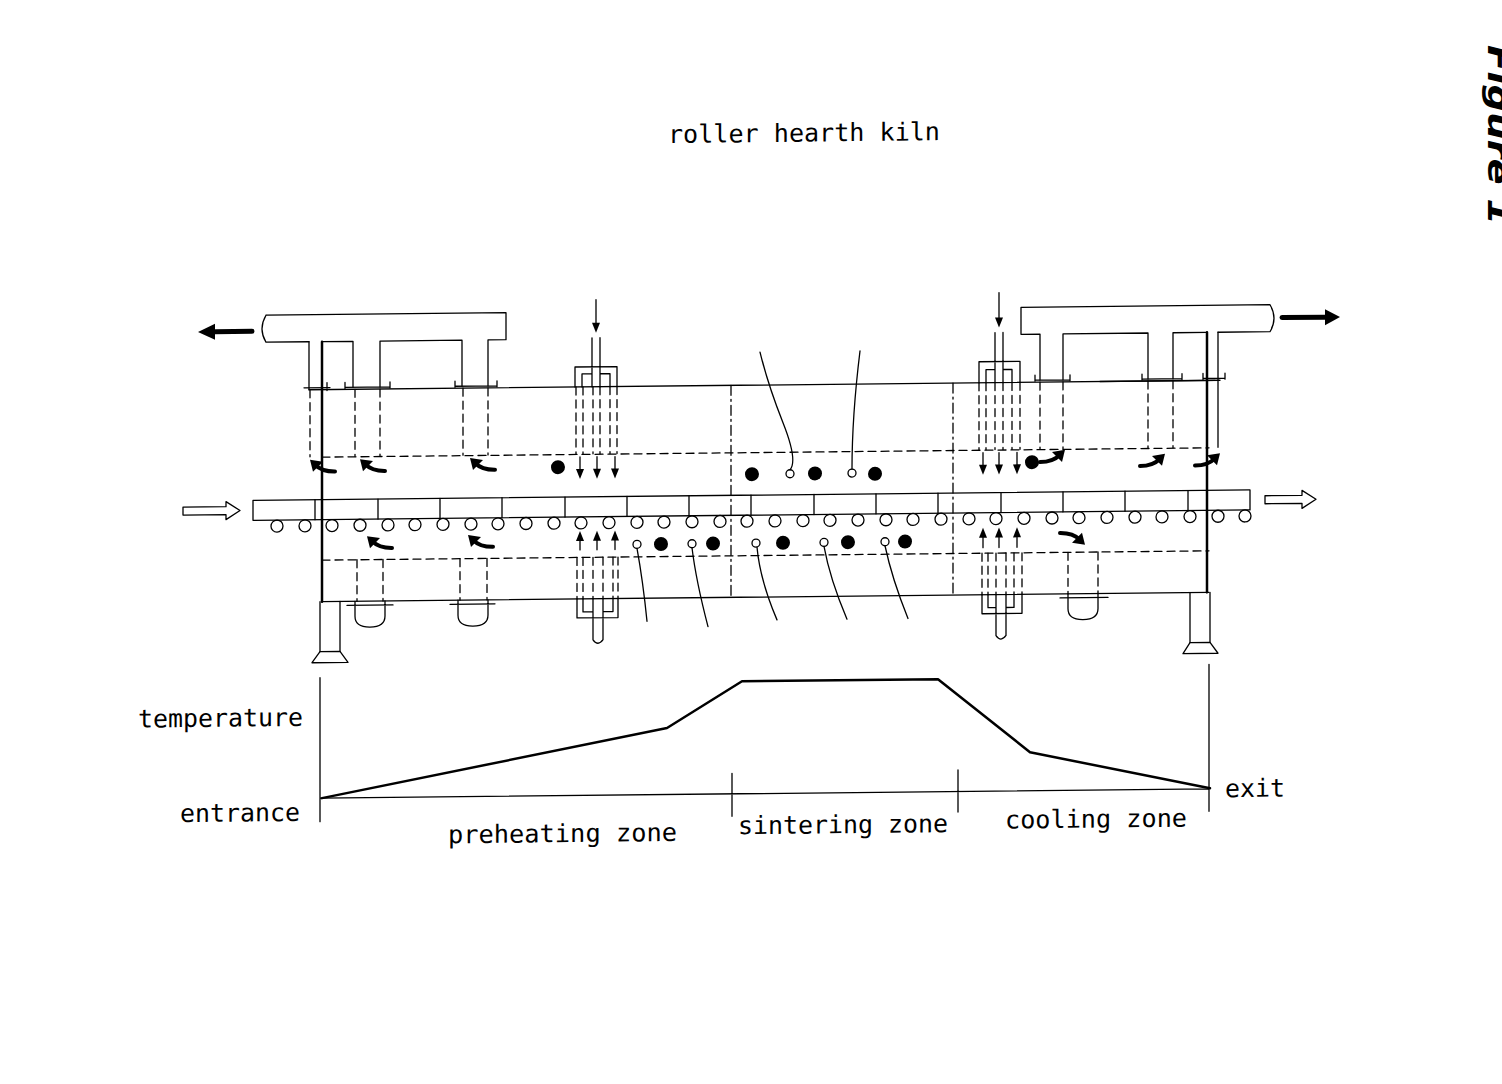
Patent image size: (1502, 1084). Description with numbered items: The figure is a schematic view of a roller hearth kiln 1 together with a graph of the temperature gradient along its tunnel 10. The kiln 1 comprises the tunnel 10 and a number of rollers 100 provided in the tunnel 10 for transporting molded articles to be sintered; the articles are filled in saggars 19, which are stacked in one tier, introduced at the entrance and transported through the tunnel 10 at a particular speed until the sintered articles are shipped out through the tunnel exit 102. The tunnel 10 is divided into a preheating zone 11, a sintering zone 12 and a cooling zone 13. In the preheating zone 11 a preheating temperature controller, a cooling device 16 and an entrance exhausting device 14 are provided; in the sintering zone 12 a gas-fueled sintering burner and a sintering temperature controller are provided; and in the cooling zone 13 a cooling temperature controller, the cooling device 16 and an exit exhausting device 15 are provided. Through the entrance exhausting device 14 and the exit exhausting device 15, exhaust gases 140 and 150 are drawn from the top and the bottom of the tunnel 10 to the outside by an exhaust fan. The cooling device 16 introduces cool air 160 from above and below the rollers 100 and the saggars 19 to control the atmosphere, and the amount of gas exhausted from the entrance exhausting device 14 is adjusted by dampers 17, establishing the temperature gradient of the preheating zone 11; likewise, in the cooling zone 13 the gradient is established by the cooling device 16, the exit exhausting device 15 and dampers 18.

The roller hearth kiln 1 is at (762, 256).
The tunnel 10 is at (817, 413).
The preheating zone 11 is at (696, 384).
The sintering zone 12 is at (920, 384).
The cooling zone 13 is at (1107, 378).
The entrance exhausting device 14 is at (343, 306).
The exit exhausting device 15 is at (1163, 378).
The cooling device 16 is at (592, 350).
The dampers 17 is at (501, 326).
The dampers 18 is at (1192, 321).
The saggar 19 is at (652, 493).
The rollers 100 is at (275, 529).
The tunnel exit 102 is at (1218, 478).
The exhaust gas 140 is at (229, 309).
The exhaust gas 150 is at (1300, 320).
The cool air 160 is at (596, 300).